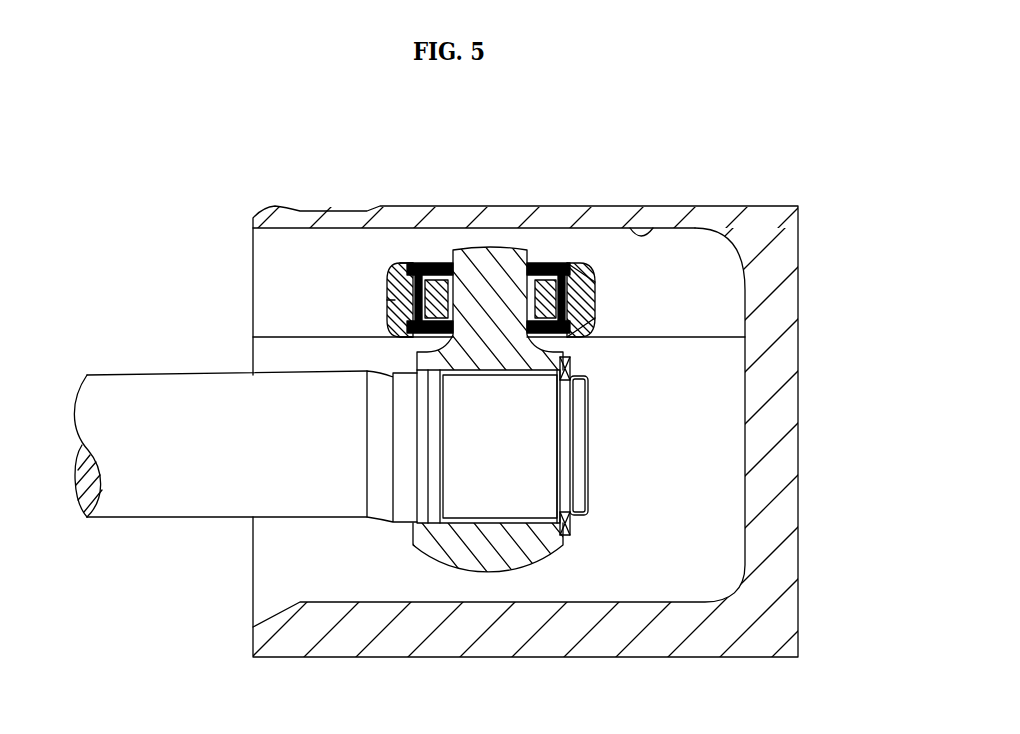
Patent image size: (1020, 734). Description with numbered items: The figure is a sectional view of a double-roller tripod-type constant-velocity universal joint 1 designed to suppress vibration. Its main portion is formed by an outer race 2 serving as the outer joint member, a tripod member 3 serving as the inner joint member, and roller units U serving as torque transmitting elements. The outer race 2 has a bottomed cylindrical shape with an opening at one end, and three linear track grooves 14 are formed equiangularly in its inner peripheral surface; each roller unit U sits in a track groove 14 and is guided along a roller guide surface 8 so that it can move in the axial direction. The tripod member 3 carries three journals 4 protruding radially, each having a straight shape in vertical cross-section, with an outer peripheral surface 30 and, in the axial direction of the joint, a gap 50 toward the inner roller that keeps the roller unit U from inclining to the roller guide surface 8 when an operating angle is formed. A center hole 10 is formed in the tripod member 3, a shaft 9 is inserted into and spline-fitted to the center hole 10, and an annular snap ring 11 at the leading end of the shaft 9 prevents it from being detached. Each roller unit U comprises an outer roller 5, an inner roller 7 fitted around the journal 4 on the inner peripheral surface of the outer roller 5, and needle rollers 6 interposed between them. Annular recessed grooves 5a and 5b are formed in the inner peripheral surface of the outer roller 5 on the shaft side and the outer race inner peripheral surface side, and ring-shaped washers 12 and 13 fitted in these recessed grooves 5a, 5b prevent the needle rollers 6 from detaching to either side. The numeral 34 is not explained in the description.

The tripod-type constant-velocity universal joint 1 is at (705, 185).
The outer race 2 is at (453, 198).
The tripod member 3 is at (487, 555).
The journal 4 is at (501, 268).
The hub portion 34 is at (499, 288).
The outer roller 5 is at (390, 268).
The recessed groove 5a is at (415, 265).
The recessed groove 5b is at (412, 337).
The needle rollers 6 is at (393, 310).
The inner roller 7 is at (433, 263).
The roller guide surface 8 is at (705, 295).
The shaft 9 is at (165, 497).
The center hole 10 is at (532, 522).
The snap ring 11 is at (580, 370).
The washer 12 is at (557, 263).
The washer 13 is at (567, 340).
The track groove 14 is at (656, 228).
The outer peripheral surface 30 is at (590, 287).
The gap 50 is at (592, 313).
The roller unit U is at (607, 278).